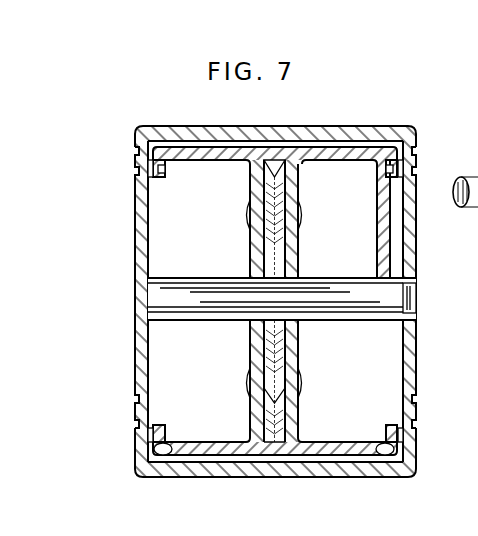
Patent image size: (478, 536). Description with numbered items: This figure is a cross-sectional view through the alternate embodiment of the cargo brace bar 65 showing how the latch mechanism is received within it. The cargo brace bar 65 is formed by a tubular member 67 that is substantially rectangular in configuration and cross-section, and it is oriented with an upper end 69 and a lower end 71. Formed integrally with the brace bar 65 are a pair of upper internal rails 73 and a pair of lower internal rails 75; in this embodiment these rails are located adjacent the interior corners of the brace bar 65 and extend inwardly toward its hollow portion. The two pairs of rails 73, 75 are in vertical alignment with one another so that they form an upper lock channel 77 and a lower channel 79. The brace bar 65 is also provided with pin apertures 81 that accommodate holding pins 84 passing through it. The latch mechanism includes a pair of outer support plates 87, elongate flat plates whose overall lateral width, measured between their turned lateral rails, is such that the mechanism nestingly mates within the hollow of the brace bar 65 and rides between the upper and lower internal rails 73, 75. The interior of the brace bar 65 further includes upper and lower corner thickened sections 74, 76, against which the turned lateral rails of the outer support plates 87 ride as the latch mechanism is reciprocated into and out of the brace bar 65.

The cargo brace bar 65 is at (126, 268).
The tubular member 67 is at (134, 340).
The upper end 69 is at (364, 104).
The lower end 71 is at (290, 480).
The upper internal rails 73 is at (163, 162).
The upper corner thickened section 74 is at (172, 172).
The lower internal rails 75 is at (155, 448).
The lower corner thickened section 76 is at (172, 428).
The upper lock channel 77 is at (262, 143).
The lower channel 79 is at (265, 463).
The pin apertures 81 is at (420, 304).
The holding pins 84 is at (147, 298).
The outer support plates 87 is at (256, 186).